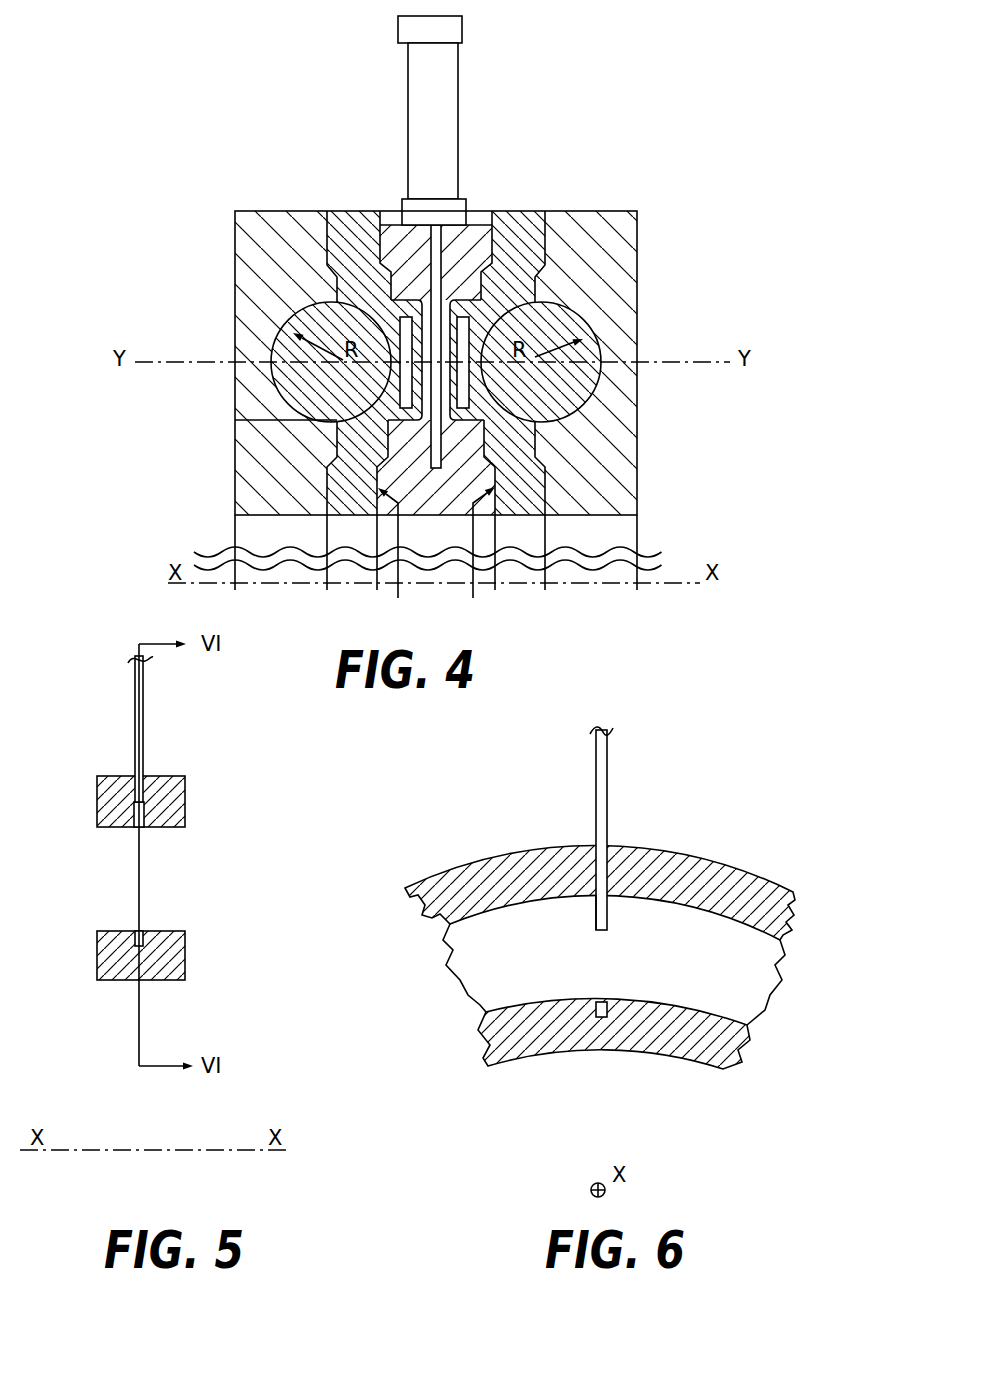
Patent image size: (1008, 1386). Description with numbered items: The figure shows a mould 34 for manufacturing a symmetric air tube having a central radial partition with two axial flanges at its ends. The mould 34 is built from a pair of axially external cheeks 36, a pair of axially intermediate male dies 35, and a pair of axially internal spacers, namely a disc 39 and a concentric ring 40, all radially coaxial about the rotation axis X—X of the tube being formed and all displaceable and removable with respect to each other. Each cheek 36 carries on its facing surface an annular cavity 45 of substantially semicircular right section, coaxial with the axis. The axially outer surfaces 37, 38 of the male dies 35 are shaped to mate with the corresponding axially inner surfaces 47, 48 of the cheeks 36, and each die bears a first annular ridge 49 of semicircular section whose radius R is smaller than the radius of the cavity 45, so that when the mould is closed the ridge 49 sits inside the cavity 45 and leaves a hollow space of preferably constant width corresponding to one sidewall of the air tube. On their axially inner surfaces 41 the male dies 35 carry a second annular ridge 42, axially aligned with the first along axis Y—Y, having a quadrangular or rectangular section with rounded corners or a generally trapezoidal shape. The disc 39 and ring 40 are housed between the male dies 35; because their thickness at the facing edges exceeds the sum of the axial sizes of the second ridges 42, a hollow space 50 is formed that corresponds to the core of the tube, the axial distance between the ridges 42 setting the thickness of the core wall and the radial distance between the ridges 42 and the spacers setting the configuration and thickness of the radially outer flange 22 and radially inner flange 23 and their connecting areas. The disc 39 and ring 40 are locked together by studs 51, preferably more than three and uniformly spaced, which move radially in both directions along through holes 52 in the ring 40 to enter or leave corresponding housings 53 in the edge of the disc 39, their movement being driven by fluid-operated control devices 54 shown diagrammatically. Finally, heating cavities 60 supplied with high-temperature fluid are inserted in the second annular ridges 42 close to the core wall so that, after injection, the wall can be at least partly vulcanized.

In FIG. 4, the radially outer flange 22 is at (410, 299).
In FIG. 4, the radially inner flange 23 is at (408, 422).
In FIG. 4, the mould 34 is at (610, 142).
In FIG. 4, the axially intermediate male dies 35 is at (349, 221).
In FIG. 4, the axially external cheeks 36 is at (617, 258).
In FIG. 4, the axially outer surface of male die 37 is at (324, 482).
In FIG. 4, the axially outer surface of male die 38 is at (548, 482).
In FIG. 4, the disc 39 is at (463, 503).
In FIG. 5, the disc 39 is at (177, 976).
In FIG. 6, the disc 39 is at (665, 1040).
In FIG. 4, the ring 40 is at (472, 240).
In FIG. 5, the ring 40 is at (171, 785).
In FIG. 6, the ring 40 is at (683, 862).
In FIG. 4, the axially inner surfaces of male dies 41 is at (436, 557).
In FIG. 4, the second annular ridge 42 is at (400, 388).
In FIG. 4, the annular cavity 45 is at (280, 333).
In FIG. 4, the axially inner surface of cheek 47 is at (342, 432).
In FIG. 4, the axially inner surface of cheek 48 is at (537, 422).
In FIG. 4, the first annular ridge 49 is at (303, 312).
In FIG. 4, the hollow space 50 is at (462, 335).
In FIG. 4, the studs 51 is at (431, 247).
In FIG. 5, the studs 51 is at (145, 704).
In FIG. 6, the studs 51 is at (596, 820).
In FIG. 4, the through holes 52 is at (442, 271).
In FIG. 5, the through holes 52 is at (144, 809).
In FIG. 6, the through holes 52 is at (590, 885).
In FIG. 4, the housings 53 is at (441, 469).
In FIG. 5, the housings 53 is at (143, 941).
In FIG. 6, the housings 53 is at (620, 1002).
In FIG. 4, the fluid-operated control devices 54 is at (452, 77).
In FIG. 4, the cavities 60 is at (398, 355).